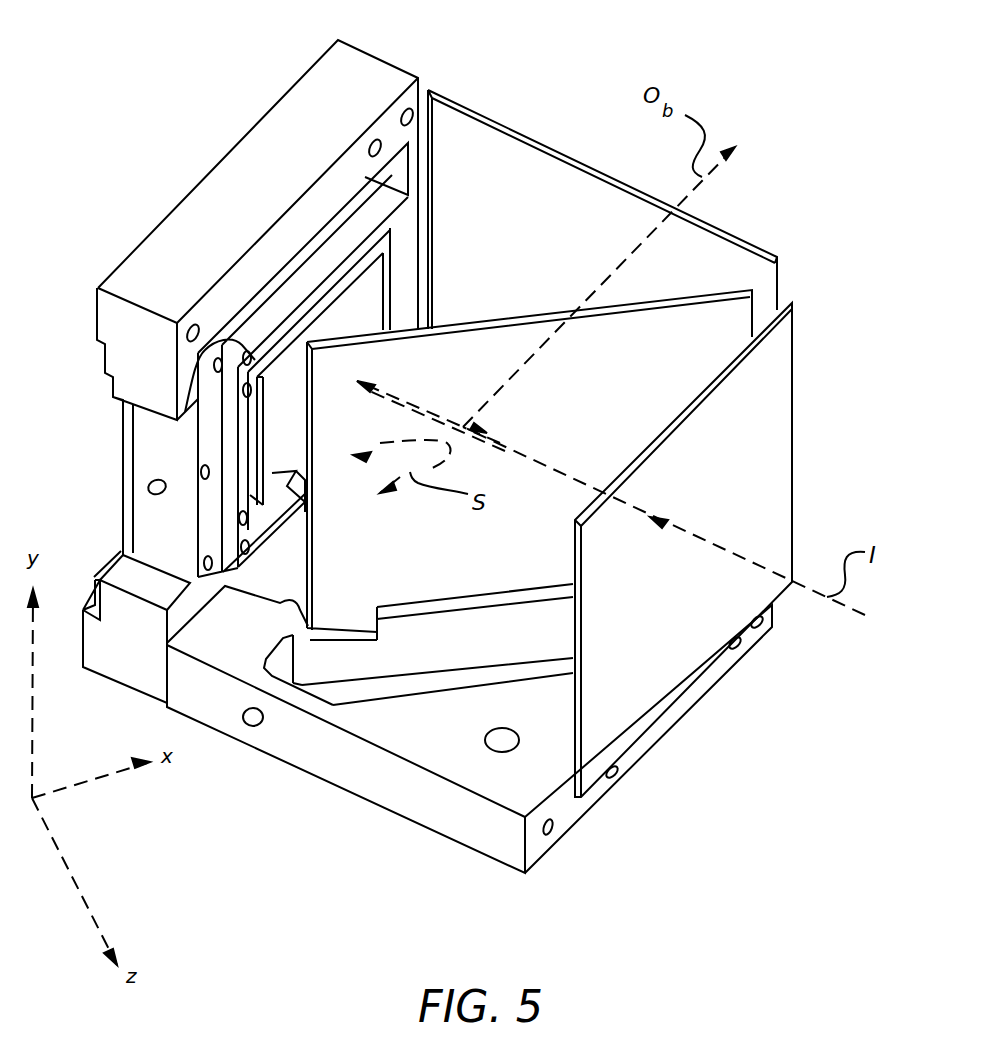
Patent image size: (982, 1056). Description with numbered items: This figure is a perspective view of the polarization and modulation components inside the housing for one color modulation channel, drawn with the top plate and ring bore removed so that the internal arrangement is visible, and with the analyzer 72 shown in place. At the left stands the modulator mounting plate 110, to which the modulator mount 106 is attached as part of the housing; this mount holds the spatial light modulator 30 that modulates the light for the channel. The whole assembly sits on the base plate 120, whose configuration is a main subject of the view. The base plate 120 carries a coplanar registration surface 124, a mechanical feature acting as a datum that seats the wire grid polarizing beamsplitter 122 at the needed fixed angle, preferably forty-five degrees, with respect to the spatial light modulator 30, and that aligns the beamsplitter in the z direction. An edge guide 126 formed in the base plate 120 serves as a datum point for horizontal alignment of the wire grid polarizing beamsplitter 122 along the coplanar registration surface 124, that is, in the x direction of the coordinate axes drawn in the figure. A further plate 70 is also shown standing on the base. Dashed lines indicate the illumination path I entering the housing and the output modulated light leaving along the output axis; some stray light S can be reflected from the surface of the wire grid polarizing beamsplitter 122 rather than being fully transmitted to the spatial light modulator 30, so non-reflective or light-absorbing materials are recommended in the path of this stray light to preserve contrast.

The modulator mounting plate 110 is at (381, 60).
The modulator mount 106 is at (337, 250).
The spatial light modulator 30 is at (297, 333).
The analyzer 72 is at (778, 256).
The side plate 70 is at (793, 345).
The wire grid polarizing beamsplitter 122 is at (690, 296).
The coplanar registration surface 124 is at (432, 604).
The edge guide 126 is at (308, 628).
The base plate 120 is at (572, 830).